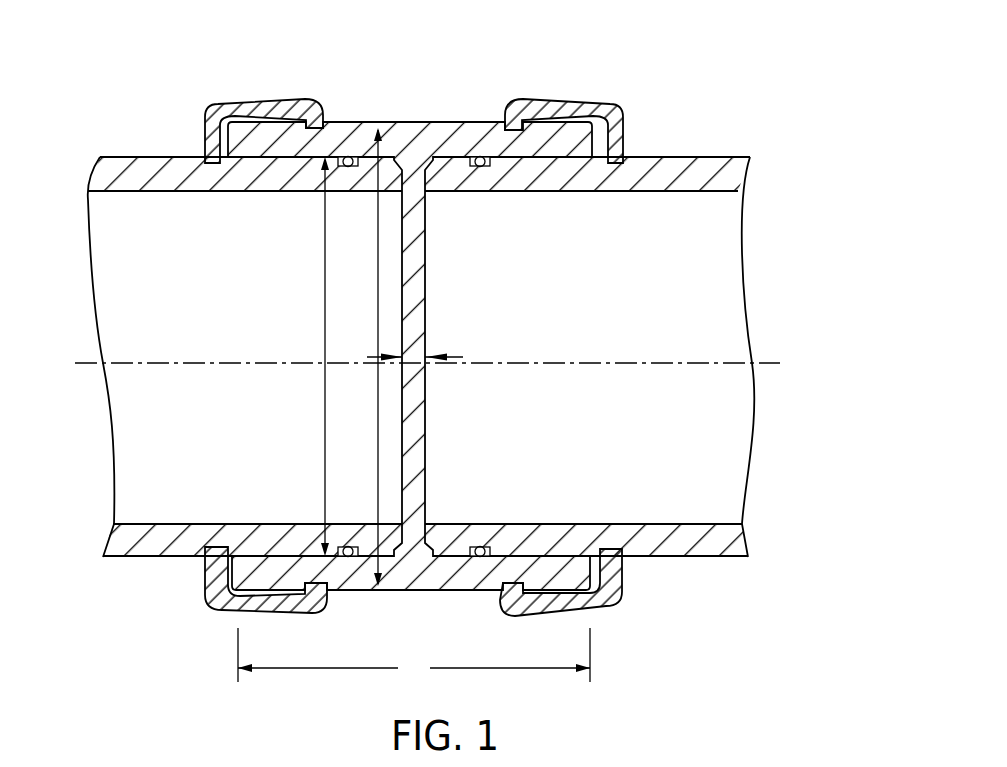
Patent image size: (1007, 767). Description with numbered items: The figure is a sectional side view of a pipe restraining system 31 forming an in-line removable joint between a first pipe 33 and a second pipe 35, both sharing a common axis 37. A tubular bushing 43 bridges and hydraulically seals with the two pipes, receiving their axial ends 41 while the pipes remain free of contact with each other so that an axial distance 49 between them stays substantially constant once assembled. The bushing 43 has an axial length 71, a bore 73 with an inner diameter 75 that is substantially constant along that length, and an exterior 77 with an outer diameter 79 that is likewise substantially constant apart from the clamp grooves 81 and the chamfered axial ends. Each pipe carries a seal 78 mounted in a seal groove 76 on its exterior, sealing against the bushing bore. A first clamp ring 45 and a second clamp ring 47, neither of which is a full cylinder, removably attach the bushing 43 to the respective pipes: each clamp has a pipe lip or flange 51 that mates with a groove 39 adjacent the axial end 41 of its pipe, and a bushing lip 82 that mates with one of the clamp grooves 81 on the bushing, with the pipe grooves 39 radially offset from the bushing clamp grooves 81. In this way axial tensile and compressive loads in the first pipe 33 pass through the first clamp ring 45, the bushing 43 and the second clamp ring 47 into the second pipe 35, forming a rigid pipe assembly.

The pipe restraining system 31 is at (616, 72).
The first pipe 33 is at (137, 153).
The second pipe 35 is at (713, 165).
The axis 37 is at (776, 358).
The groove 39 is at (213, 152).
The axial end 41 is at (404, 540).
The bushing 43 is at (349, 591).
The first clamp ring 45 is at (245, 103).
The second clamp ring 47 is at (540, 99).
The axial distance 49 is at (453, 355).
The flange 51 is at (222, 166).
The axial length 71 is at (414, 656).
The bore 73 is at (291, 545).
The inner diameter 75 is at (325, 420).
The seal groove 76 is at (348, 167).
The exterior 77 is at (333, 148).
The seal 78 is at (476, 152).
The outer diameter 79 is at (378, 285).
The clamp grooves 81 is at (310, 121).
The bushing lip 82 is at (338, 162).